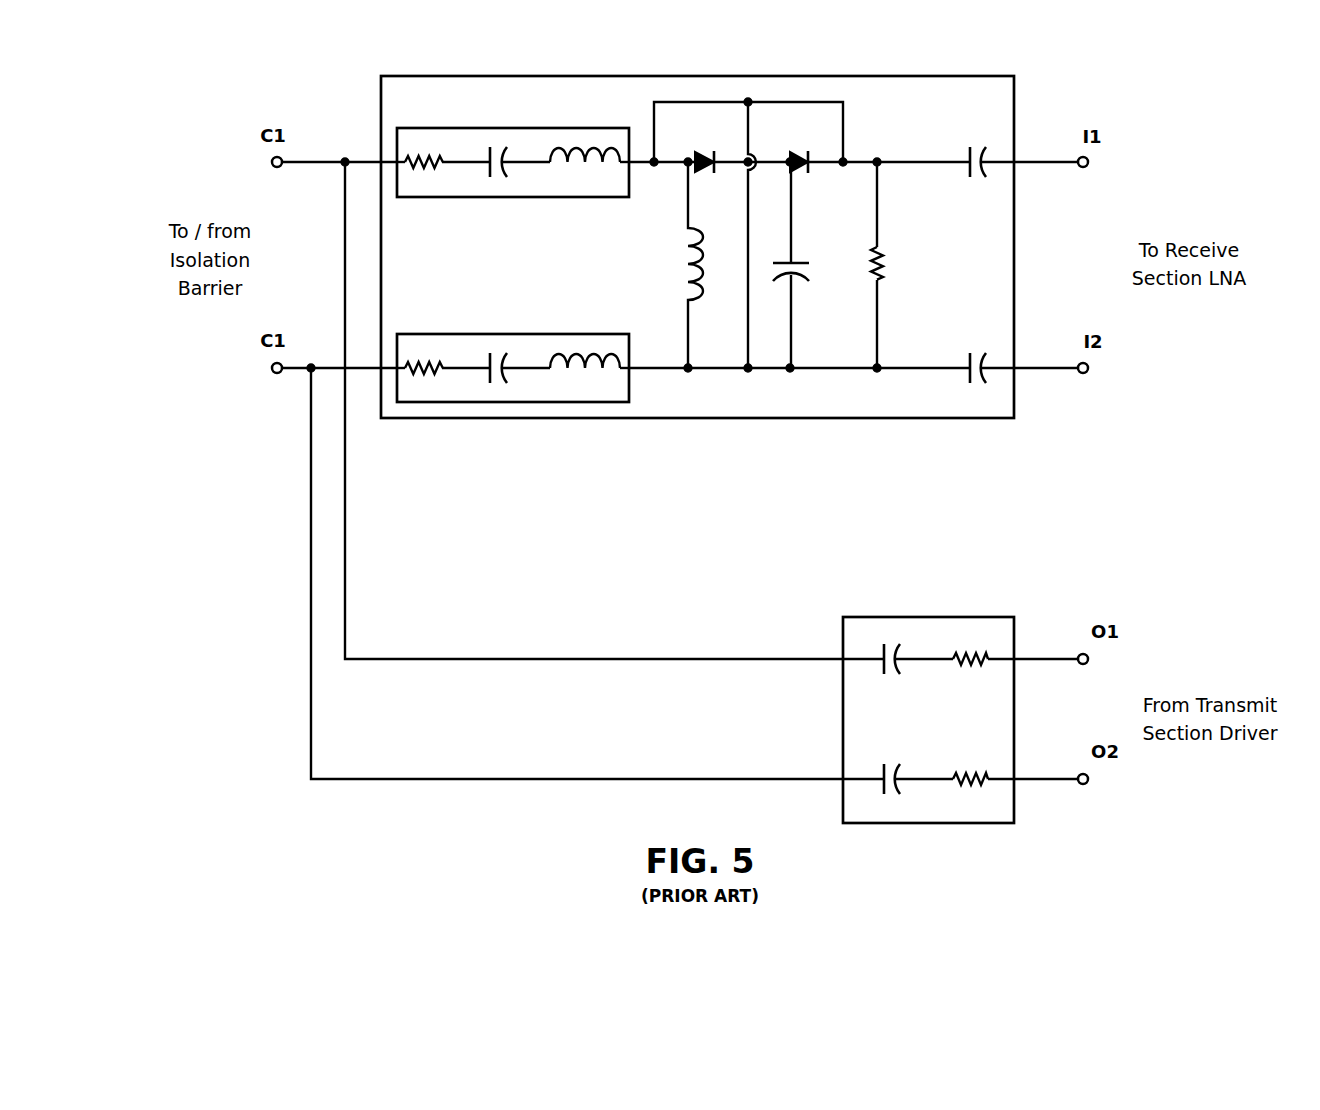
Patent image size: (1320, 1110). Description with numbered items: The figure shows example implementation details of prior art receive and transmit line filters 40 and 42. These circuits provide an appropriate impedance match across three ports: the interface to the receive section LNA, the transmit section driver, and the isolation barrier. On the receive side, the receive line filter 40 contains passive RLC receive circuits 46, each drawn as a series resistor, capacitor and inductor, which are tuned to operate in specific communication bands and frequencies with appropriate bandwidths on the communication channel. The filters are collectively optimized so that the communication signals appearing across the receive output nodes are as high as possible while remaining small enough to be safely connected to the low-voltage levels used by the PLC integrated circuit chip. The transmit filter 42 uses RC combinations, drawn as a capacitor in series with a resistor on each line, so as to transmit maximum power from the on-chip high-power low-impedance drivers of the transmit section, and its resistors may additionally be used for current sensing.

The receive line filter 40 is at (611, 75).
The transmit line filter 42 is at (937, 616).
The passive RLC receive circuit 46 is at (545, 199).